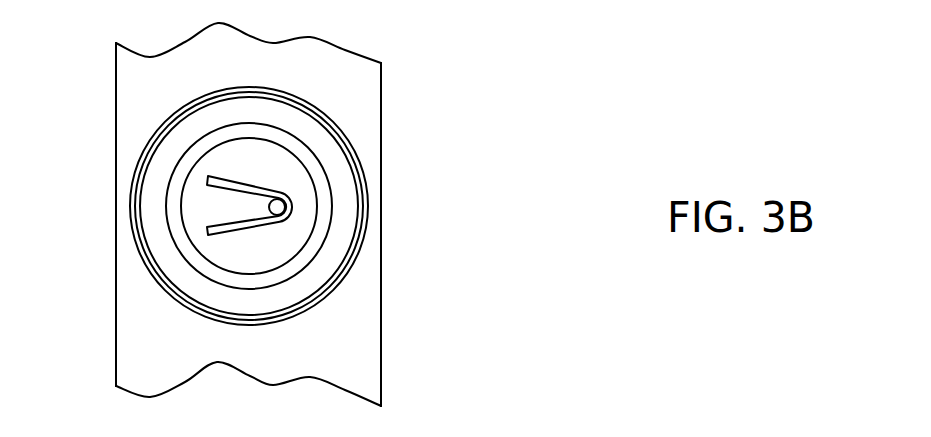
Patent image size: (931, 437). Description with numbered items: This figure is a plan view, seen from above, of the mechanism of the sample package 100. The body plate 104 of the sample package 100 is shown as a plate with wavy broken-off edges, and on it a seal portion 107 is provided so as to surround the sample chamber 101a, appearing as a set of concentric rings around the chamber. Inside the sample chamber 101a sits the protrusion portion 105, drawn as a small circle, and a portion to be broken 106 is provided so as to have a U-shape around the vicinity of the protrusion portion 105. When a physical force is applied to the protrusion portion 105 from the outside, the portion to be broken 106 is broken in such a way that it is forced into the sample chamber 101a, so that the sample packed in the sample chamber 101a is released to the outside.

The sample package 100 is at (410, 348).
The body plate 104 is at (360, 93).
The seal portion 107 is at (353, 148).
The sample chamber 101a is at (330, 210).
The protrusion portion 105 is at (287, 210).
The portion to be broken 106 is at (205, 230).